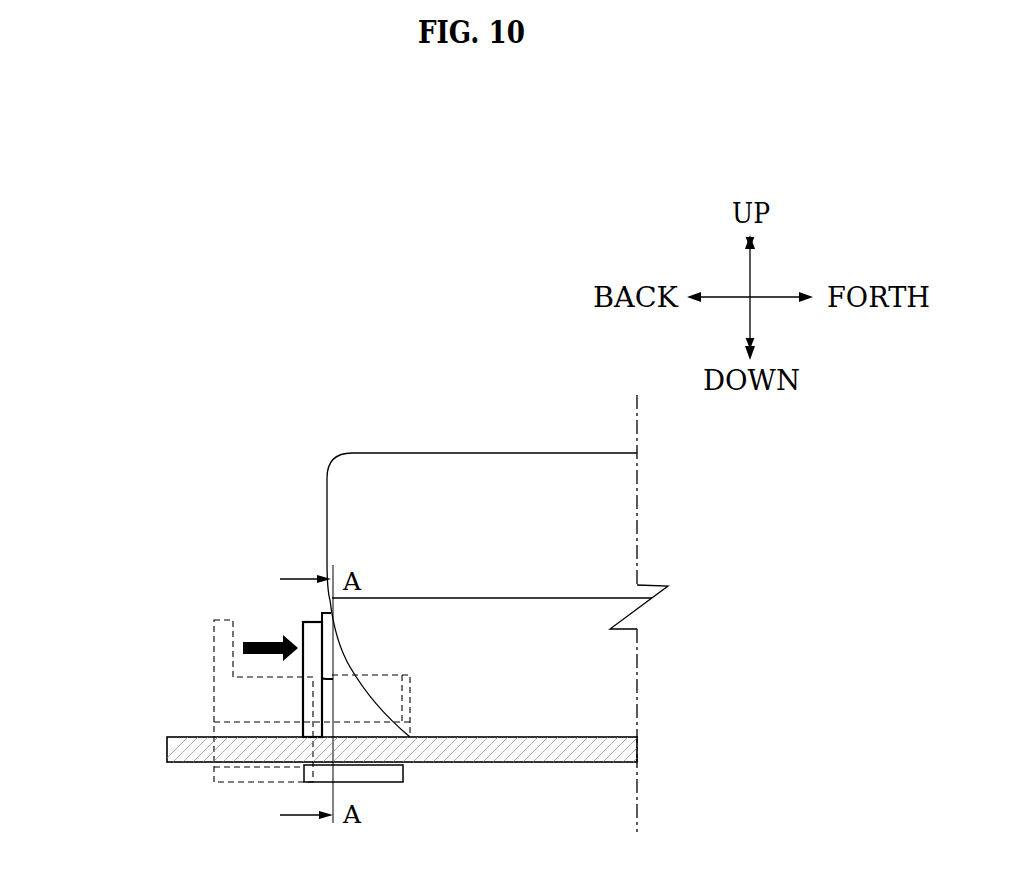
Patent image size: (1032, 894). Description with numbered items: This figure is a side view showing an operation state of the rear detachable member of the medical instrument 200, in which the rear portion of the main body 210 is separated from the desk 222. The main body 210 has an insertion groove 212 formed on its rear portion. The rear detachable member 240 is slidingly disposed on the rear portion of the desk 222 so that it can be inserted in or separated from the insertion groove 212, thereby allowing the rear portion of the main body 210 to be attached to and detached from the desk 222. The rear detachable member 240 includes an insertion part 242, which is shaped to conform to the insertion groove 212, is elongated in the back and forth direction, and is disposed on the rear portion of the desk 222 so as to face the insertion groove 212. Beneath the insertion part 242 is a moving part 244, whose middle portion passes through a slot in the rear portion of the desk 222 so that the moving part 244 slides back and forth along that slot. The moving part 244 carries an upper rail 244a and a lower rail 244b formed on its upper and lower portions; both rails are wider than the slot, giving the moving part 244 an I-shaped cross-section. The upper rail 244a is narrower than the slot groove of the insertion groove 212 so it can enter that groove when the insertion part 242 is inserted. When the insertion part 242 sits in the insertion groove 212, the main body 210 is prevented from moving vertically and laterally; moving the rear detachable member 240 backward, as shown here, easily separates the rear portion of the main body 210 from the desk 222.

The medical instrument 200 is at (296, 390).
The main body 210 is at (492, 453).
The insertion groove 212 is at (410, 692).
The desk 222 is at (568, 753).
The rear detachable member 240 is at (106, 605).
The insertion part 242 is at (301, 628).
The moving part 244 is at (301, 731).
The upper rail 244a is at (317, 732).
The lower rail 244b is at (378, 778).